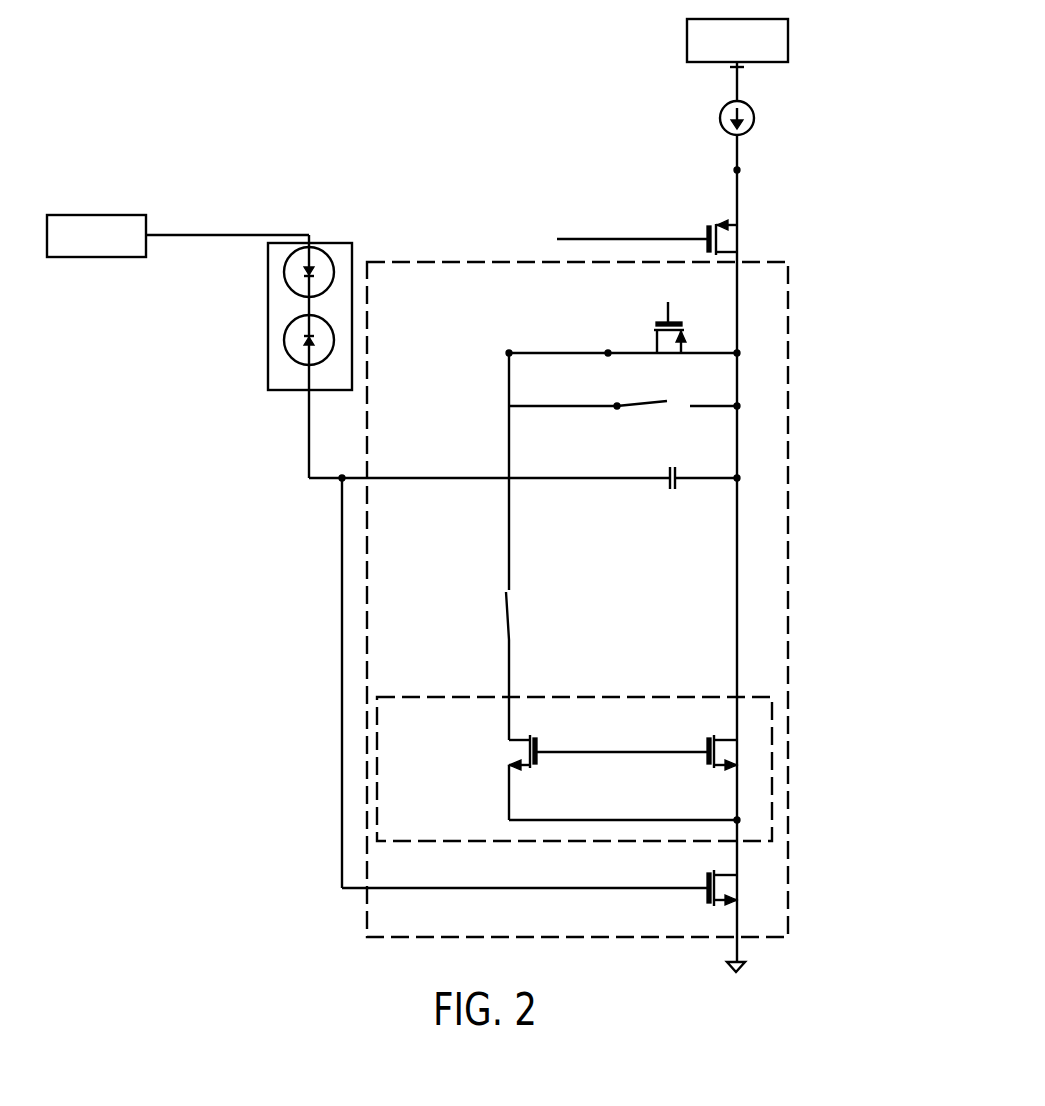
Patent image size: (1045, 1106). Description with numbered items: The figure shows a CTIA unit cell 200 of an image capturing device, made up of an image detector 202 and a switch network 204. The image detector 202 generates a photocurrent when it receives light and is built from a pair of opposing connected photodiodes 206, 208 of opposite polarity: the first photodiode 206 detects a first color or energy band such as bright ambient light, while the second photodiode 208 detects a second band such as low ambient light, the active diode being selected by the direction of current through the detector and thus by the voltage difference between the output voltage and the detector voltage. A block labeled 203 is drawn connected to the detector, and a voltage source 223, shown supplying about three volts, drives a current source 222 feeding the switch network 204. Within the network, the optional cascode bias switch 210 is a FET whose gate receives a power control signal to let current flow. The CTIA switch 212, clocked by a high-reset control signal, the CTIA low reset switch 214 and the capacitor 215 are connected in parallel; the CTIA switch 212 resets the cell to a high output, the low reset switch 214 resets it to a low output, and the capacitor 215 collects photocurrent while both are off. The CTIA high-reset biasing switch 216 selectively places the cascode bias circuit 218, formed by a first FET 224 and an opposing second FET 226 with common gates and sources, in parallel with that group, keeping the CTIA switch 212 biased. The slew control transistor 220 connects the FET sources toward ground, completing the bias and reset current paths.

The CTIA unit cell 200 is at (858, 118).
The image detector 202 is at (263, 321).
The detector bias 203 is at (111, 250).
The switch network 204 is at (771, 252).
The first photodiode 206 is at (288, 282).
The second photodiode 208 is at (288, 347).
The cascode bias switch 210 is at (712, 228).
The CTIA switch 212 is at (655, 330).
The CTIA low reset switch 214 is at (615, 405).
The capacitor 215 is at (668, 470).
The CTIA high-reset biasing switch 216 is at (515, 625).
The cascode bias circuit 218 is at (615, 692).
The slew control transistor 220 is at (707, 880).
The current source 222 is at (755, 118).
The voltage source 223 is at (789, 42).
The first FET 224 is at (710, 766).
The second FET 226 is at (536, 766).